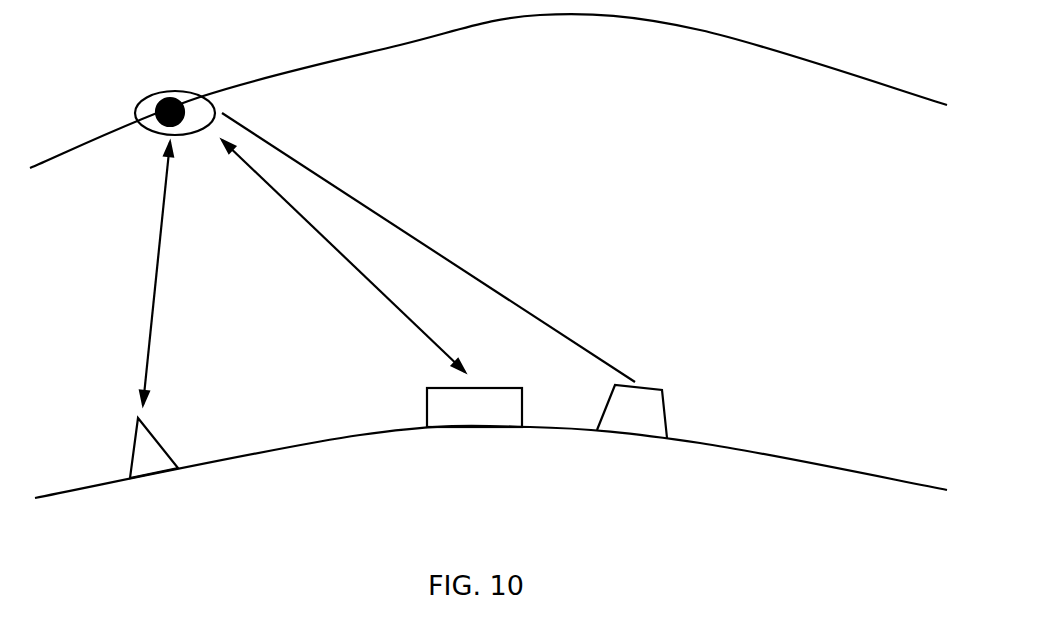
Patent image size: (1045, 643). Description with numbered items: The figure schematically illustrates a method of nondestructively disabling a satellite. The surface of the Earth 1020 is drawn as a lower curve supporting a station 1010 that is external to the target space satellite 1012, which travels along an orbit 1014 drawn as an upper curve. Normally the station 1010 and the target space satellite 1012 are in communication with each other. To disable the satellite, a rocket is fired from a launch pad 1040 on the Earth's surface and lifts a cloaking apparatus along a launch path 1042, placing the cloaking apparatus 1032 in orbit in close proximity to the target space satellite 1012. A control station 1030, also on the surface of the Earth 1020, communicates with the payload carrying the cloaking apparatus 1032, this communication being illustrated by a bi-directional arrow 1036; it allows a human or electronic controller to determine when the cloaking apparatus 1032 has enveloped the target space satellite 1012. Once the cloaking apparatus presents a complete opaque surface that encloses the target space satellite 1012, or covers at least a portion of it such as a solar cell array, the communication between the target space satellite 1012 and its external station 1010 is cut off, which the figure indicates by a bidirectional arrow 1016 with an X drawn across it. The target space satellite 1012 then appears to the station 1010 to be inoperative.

The station 1010 is at (159, 466).
The target space satellite 1012 is at (189, 95).
The orbit 1014 is at (488, 90).
The bidirectional arrow 1016 is at (180, 273).
The surface of the Earth 1020 is at (305, 450).
The control station 1030 is at (480, 442).
The cloaking apparatus 1032 is at (135, 103).
The bi-directional arrow 1036 is at (343, 256).
The launch pad 1040 is at (625, 453).
The launch path 1042 is at (432, 247).